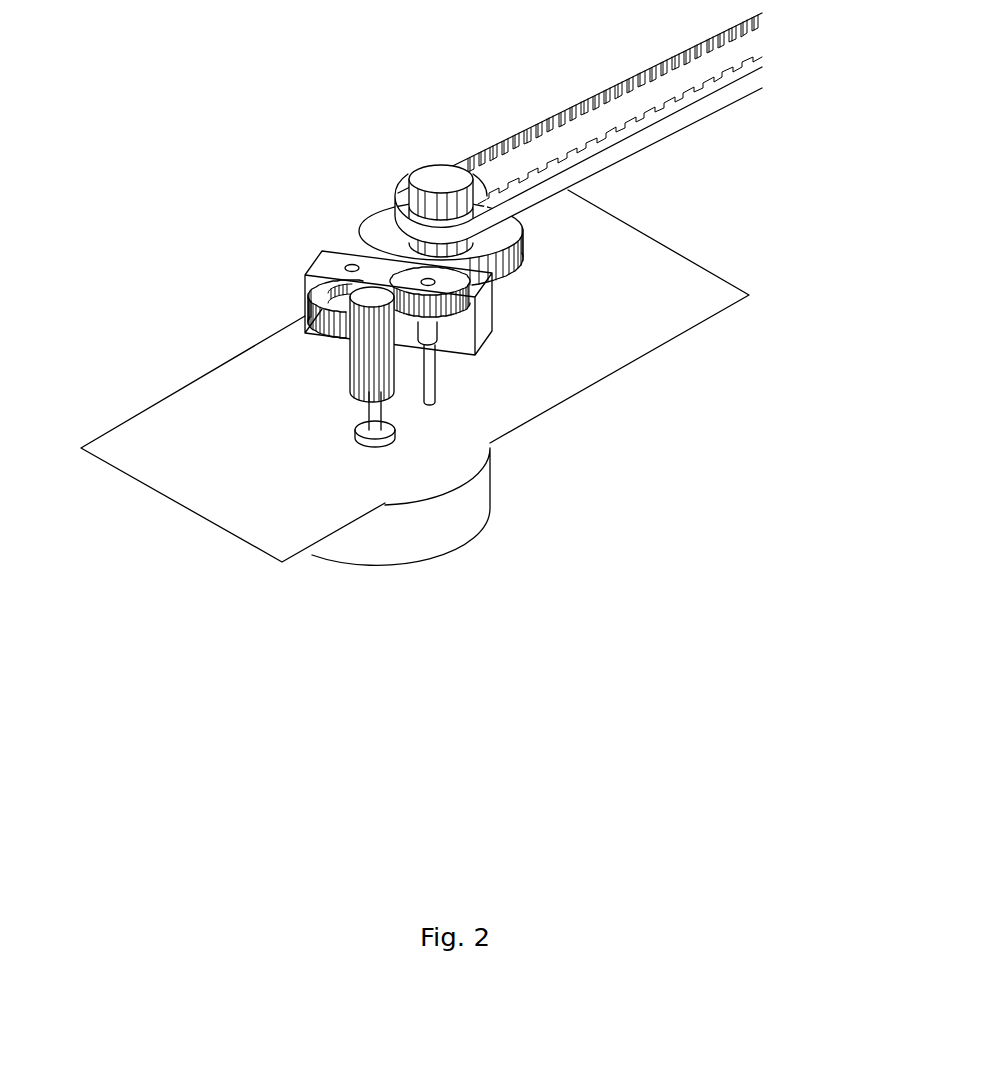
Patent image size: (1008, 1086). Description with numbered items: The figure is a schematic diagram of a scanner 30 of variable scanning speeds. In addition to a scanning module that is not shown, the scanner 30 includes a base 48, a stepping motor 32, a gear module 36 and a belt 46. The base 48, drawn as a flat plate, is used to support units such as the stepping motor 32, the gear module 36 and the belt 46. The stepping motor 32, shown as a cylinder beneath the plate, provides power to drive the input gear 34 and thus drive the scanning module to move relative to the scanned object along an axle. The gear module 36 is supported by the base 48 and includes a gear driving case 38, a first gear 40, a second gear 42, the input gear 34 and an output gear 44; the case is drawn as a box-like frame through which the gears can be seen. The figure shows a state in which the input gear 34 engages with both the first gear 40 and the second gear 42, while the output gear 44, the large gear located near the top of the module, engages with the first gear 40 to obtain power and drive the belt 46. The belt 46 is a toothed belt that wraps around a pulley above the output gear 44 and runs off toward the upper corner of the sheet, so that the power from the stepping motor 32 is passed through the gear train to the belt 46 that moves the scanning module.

The scanner 30 is at (393, 140).
The stepping motor 32 is at (453, 522).
The input gear 34 is at (368, 380).
The gear module 36 is at (328, 256).
The gear driving case 38 is at (483, 313).
The first gear 40 is at (328, 337).
The second gear 42 is at (432, 320).
The output gear 44 is at (500, 235).
The belt 46 is at (647, 143).
The base 48 is at (263, 548).